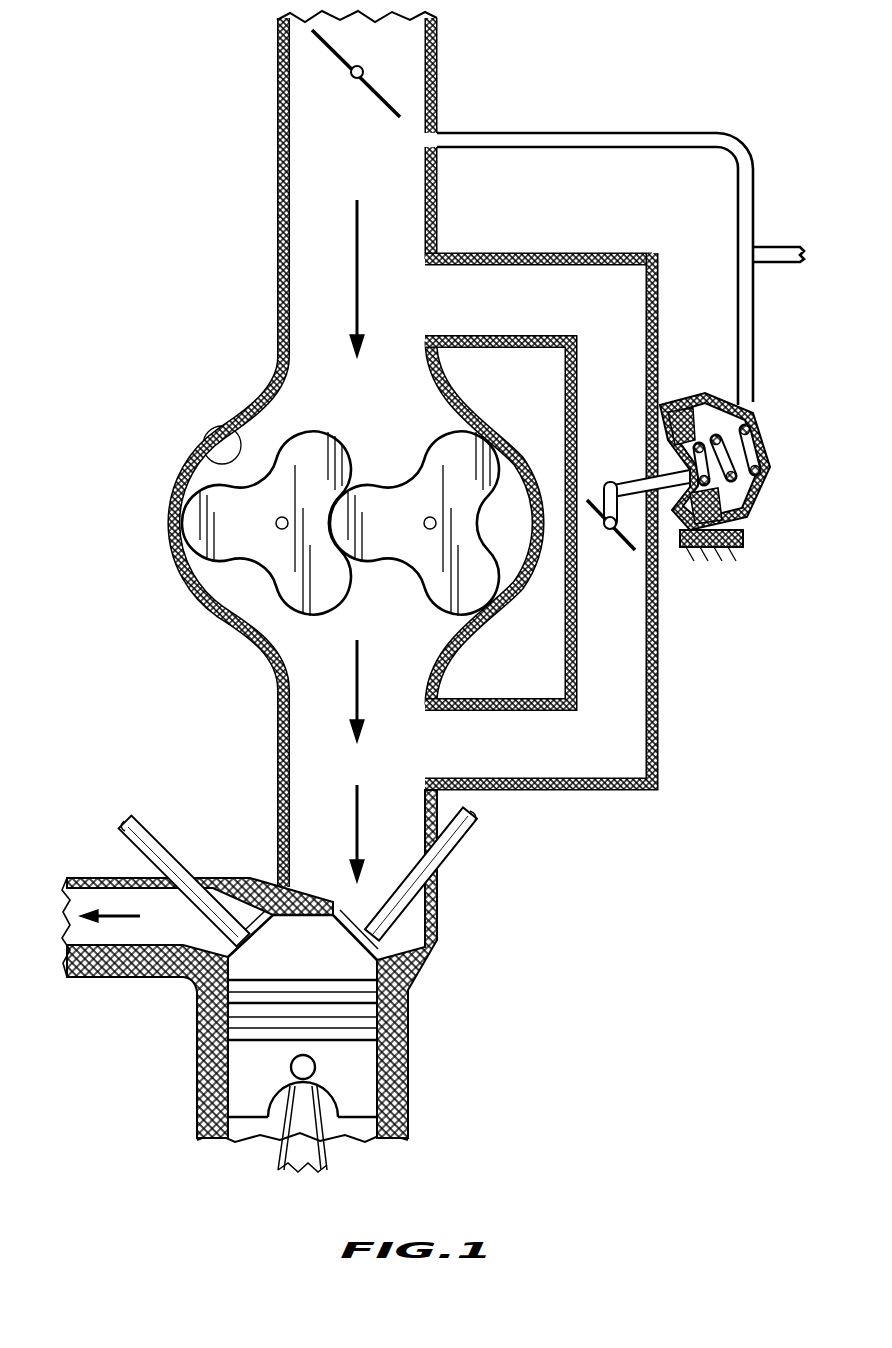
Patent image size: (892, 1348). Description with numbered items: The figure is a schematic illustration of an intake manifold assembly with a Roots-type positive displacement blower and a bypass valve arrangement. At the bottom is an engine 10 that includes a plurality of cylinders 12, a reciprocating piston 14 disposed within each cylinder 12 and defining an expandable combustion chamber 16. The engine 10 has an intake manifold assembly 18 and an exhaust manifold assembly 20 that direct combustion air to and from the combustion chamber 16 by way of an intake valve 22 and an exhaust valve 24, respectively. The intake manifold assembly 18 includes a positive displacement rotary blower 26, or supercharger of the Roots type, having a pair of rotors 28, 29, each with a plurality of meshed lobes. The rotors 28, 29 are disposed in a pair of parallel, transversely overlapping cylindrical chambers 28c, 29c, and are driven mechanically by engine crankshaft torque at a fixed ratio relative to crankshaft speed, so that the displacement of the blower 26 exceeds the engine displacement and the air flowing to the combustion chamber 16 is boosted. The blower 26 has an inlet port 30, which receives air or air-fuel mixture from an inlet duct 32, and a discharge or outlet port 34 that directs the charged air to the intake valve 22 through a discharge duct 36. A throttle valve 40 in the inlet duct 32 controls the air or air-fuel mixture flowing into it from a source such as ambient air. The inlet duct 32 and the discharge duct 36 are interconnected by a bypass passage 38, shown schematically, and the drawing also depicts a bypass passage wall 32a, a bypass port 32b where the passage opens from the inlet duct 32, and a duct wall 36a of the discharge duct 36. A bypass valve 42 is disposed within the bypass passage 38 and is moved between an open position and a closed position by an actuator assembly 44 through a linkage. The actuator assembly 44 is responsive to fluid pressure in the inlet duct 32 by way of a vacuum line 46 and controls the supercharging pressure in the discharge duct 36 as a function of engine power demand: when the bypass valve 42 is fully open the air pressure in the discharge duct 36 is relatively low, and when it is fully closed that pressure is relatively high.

The engine 10 is at (160, 1005).
The cylinder 12 is at (395, 1053).
The reciprocating piston 14 is at (355, 1093).
The combustion chamber 16 is at (318, 964).
The intake manifold assembly 18 is at (303, 567).
The exhaust manifold assembly 20 is at (100, 877).
The intake valve 22 is at (472, 843).
The exhaust valve 24 is at (165, 832).
The positive displacement rotary blower 26 is at (157, 482).
The rotor 28 is at (262, 588).
The cylindrical chamber 28c is at (237, 450).
The rotor 29 is at (405, 580).
The cylindrical chamber 29c is at (513, 520).
The inlet port 30 is at (333, 380).
The inlet duct 32 is at (345, 127).
The bypass passage wall 32a is at (485, 295).
The bypass port 32b is at (426, 141).
The outlet port 34 is at (328, 667).
The discharge duct 36 is at (328, 818).
The duct wall 36a is at (487, 740).
The bypass passage 38 is at (625, 660).
The throttle valve 40 is at (333, 50).
The bypass valve 42 is at (626, 542).
The actuator assembly 44 is at (775, 430).
The vacuum line 46 is at (648, 133).